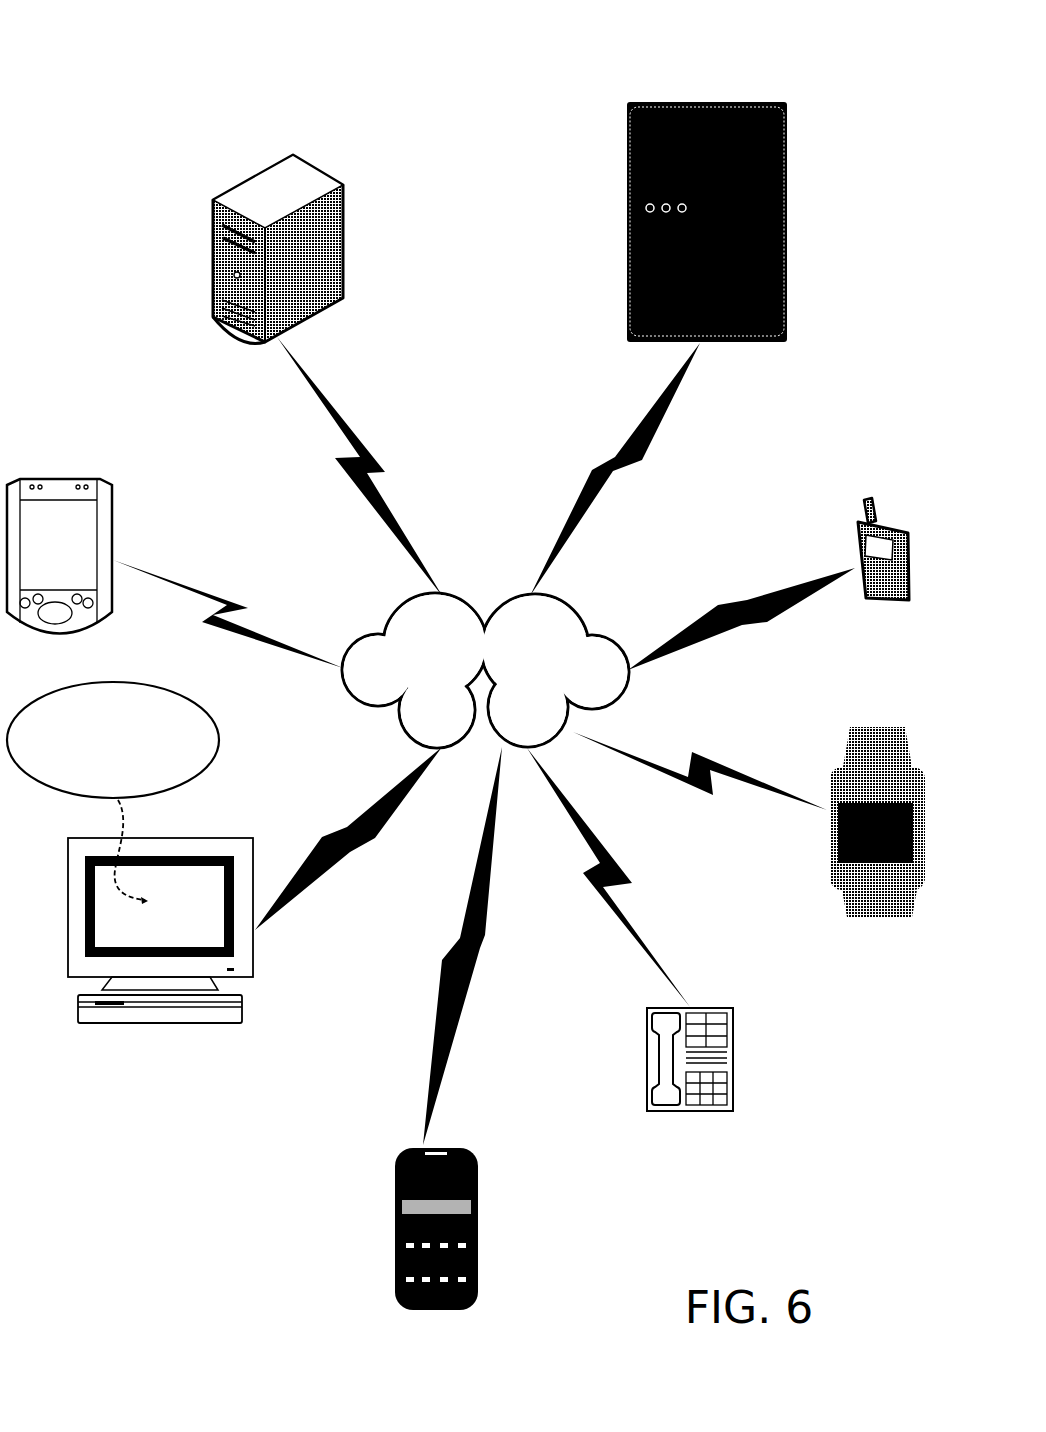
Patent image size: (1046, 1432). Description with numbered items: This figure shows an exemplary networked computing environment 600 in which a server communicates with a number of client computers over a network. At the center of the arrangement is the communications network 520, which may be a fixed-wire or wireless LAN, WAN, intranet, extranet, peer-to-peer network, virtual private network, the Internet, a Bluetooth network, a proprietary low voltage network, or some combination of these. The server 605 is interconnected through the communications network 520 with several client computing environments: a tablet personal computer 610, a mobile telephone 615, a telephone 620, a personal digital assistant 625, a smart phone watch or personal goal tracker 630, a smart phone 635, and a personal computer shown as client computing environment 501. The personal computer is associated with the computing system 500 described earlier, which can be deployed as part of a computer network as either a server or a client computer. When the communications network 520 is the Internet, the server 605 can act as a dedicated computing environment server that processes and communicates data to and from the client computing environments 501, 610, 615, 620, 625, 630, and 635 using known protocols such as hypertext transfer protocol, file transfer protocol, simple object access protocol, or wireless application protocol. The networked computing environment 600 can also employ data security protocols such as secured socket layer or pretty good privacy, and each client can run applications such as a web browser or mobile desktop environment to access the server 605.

The networked computing environment 600 is at (148, 46).
The server 605 is at (290, 193).
The tablet personal computer 610 is at (683, 147).
The mobile telephone 615 is at (862, 502).
The telephone 620 is at (728, 1038).
The personal digital assistant 625 is at (77, 507).
The smart phone watch/personal goal tracker 630 is at (850, 797).
The smart phone 635 is at (395, 1222).
The communications network 520 is at (485, 670).
The computing system 500 is at (113, 793).
The client computing environment 501 is at (160, 942).